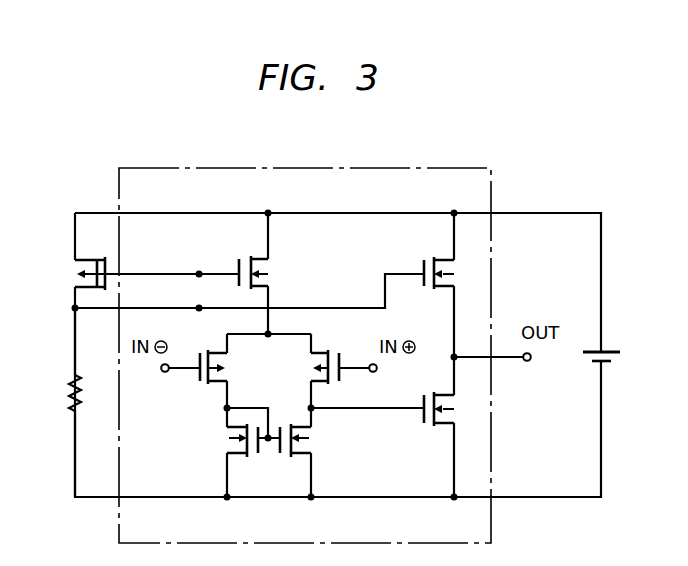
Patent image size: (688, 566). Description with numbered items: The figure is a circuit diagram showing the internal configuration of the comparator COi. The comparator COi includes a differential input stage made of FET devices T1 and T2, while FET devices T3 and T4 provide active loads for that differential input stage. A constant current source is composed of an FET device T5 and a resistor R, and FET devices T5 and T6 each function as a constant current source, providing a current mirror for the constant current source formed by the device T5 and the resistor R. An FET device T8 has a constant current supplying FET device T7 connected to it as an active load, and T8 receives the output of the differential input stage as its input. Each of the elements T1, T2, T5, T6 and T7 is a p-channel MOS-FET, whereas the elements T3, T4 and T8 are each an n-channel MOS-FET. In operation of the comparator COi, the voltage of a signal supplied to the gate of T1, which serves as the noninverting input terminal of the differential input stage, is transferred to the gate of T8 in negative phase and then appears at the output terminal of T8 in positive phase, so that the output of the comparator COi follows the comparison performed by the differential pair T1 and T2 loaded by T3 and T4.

The FET device T1 is at (325, 353).
The FET device T2 is at (206, 353).
The FET device T3 is at (313, 438).
The FET device T4 is at (223, 438).
The FET device T5 is at (71, 275).
The FET device T6 is at (272, 276).
The constant current supplying FET device T7 is at (458, 275).
The FET device T8 is at (460, 409).
The resistor R is at (70, 385).
The comparator COi is at (389, 168).